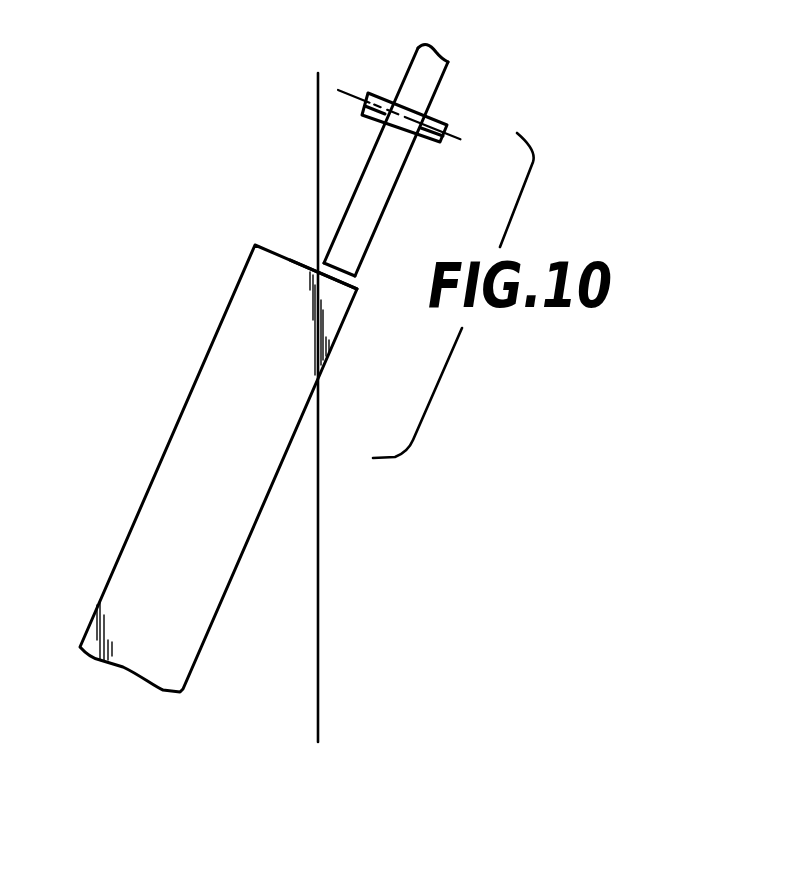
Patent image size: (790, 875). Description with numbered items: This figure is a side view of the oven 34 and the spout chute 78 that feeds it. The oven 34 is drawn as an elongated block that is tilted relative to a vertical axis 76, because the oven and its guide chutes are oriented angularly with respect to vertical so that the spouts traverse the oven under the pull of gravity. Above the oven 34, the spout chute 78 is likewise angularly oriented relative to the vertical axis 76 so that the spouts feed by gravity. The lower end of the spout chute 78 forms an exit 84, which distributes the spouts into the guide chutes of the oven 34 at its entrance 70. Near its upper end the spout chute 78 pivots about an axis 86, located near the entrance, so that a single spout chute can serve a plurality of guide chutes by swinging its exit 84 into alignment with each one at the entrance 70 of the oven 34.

The oven 34 is at (205, 593).
The entrance 70 is at (362, 282).
The vertical axis 76 is at (318, 570).
The spout chute 78 is at (382, 182).
The exit 84 is at (334, 265).
The axis 86 is at (350, 92).